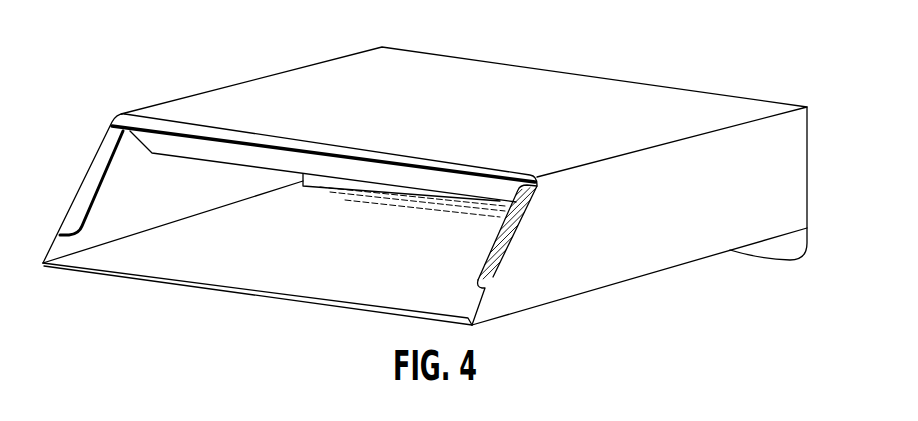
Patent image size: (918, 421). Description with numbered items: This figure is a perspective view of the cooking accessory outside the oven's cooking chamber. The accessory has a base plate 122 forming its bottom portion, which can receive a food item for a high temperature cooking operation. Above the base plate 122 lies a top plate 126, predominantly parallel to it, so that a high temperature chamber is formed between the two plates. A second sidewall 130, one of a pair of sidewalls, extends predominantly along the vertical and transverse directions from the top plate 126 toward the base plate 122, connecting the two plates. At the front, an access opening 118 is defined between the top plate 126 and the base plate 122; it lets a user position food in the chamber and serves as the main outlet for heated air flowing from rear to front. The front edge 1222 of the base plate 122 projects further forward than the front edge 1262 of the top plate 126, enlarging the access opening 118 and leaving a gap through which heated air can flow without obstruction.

The access opening 118 is at (442, 186).
The base plate 122 is at (425, 273).
The front edge of base plate 1222 is at (303, 303).
The top plate 126 is at (456, 101).
The front edge of top plate 1262 is at (166, 128).
The second sidewall 130 is at (783, 181).